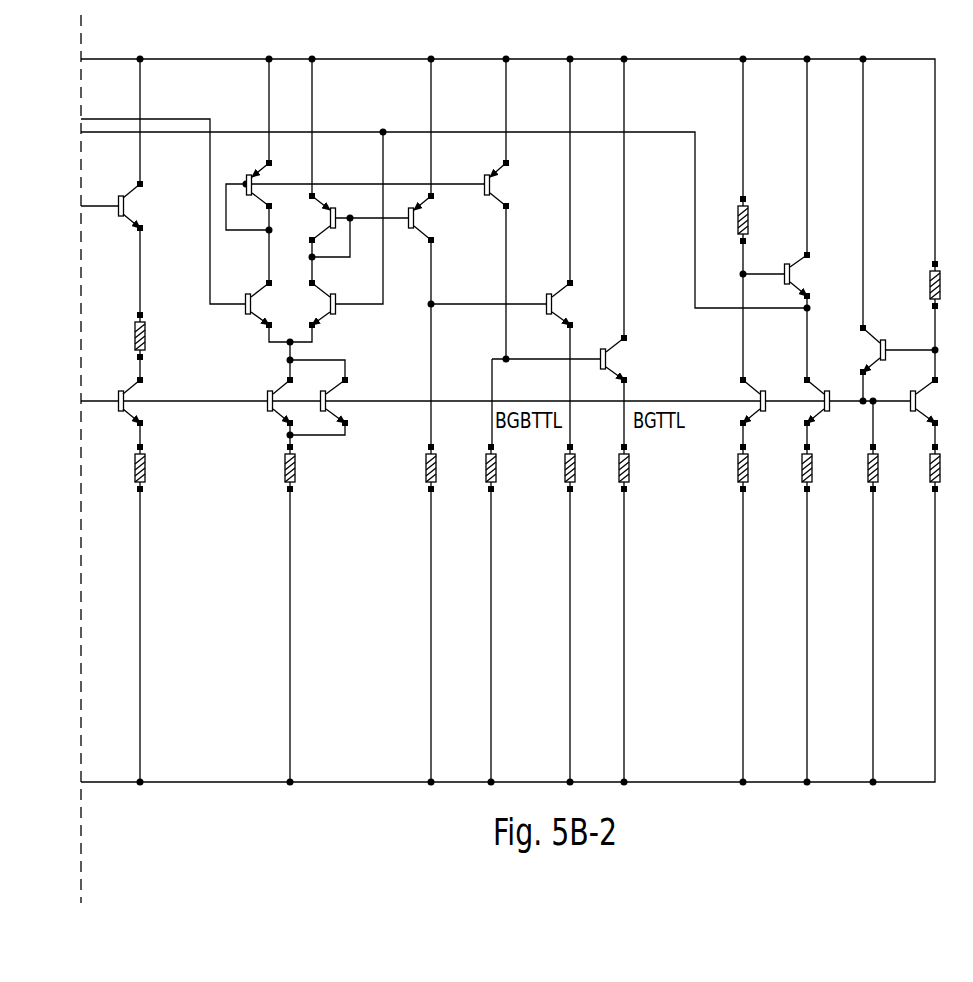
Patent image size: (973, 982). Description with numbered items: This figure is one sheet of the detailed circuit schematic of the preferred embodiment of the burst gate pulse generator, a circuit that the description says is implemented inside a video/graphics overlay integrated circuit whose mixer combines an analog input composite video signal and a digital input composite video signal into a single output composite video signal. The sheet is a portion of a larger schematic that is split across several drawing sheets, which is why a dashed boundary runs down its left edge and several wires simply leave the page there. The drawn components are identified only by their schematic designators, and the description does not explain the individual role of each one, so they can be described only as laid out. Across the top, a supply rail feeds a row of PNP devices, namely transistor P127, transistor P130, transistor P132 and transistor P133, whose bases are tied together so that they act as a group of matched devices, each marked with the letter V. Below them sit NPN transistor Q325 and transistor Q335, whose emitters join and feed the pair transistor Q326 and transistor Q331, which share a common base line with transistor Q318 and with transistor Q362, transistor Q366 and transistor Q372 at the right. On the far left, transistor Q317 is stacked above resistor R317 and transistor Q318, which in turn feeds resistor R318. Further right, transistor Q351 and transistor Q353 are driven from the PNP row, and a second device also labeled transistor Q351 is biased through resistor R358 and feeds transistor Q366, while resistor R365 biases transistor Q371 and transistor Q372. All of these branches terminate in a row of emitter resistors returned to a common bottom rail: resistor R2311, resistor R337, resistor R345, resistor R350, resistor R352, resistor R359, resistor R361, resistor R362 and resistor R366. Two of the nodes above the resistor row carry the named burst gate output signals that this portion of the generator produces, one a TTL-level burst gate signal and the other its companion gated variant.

The transistor Q317 is at (112, 200).
The PNP transistor P127 is at (245, 184).
The PNP transistor P130 is at (308, 222).
The PNP transistor P132 is at (439, 223).
The PNP transistor P133 is at (483, 185).
The transistor Q325 is at (244, 299).
The transistor Q335 is at (336, 299).
The resistor R317 is at (162, 304).
The transistor Q318 is at (154, 401).
The resistor R318 is at (162, 468).
The transistor Q326 is at (265, 397).
The transistor Q331 is at (321, 397).
The resistor R2311 is at (261, 468).
The resistor R337 is at (408, 468).
The resistor R345 is at (468, 468).
The resistor R350 is at (546, 468).
The resistor R352 is at (647, 468).
The transistor Q351 is at (681, 290).
The transistor Q353 is at (632, 359).
The resistor R358 is at (765, 220).
The resistor R365 is at (911, 285).
The transistor Q362 is at (766, 398).
The transistor Q366 is at (830, 398).
The transistor Q371 is at (886, 345).
The transistor Q372 is at (910, 398).
The resistor R359 is at (720, 468).
The resistor R361 is at (784, 468).
The resistor R362 is at (850, 468).
The resistor R366 is at (911, 468).